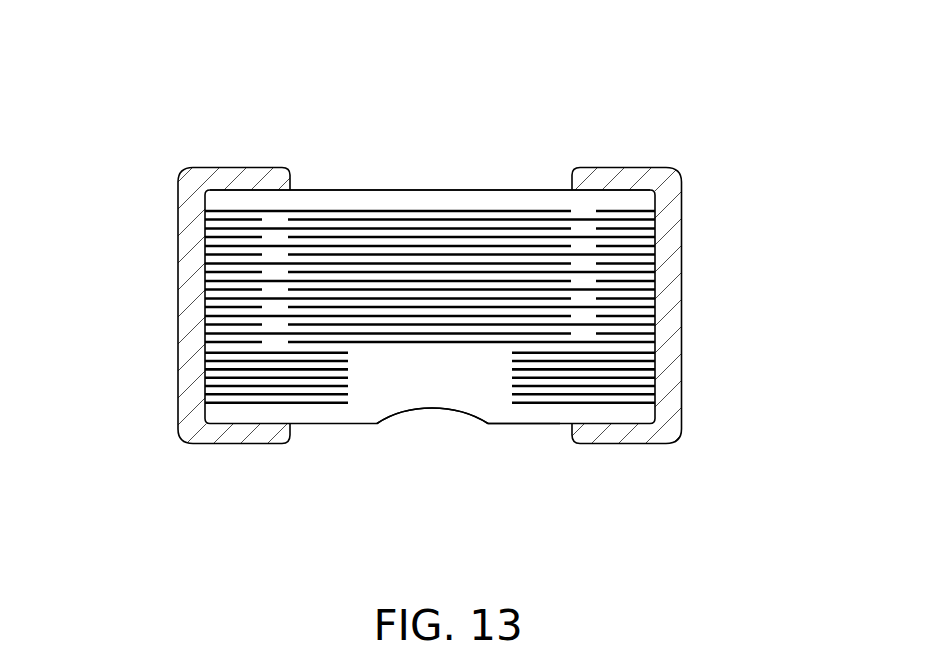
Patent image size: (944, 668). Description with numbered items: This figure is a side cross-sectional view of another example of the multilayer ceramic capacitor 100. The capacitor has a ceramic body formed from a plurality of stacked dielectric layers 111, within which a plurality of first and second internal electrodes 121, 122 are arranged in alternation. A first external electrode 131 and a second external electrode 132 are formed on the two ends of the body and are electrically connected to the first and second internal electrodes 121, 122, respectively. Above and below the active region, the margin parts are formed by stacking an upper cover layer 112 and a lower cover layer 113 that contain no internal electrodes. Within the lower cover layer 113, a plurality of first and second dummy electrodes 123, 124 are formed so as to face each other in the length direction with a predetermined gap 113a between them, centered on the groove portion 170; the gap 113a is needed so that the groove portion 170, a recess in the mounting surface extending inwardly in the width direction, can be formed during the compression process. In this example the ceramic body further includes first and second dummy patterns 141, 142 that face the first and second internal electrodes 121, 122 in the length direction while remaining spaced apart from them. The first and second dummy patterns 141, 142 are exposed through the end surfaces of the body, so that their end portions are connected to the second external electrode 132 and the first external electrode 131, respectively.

The multilayer ceramic capacitor 100 is at (275, 19).
The dielectric layers 111 is at (637, 278).
The upper cover layer 112 is at (430, 198).
The lower cover layer 113 is at (505, 444).
The gap 113a is at (466, 389).
The first internal electrodes 121 is at (347, 212).
The second internal electrodes 122 is at (484, 218).
The first dummy electrodes 123 is at (320, 405).
The second dummy electrodes 124 is at (613, 405).
The first external electrode 131 is at (248, 168).
The second external electrode 132 is at (650, 172).
The first dummy patterns 141 is at (627, 210).
The second dummy patterns 142 is at (218, 219).
The groove portion 170 is at (430, 408).